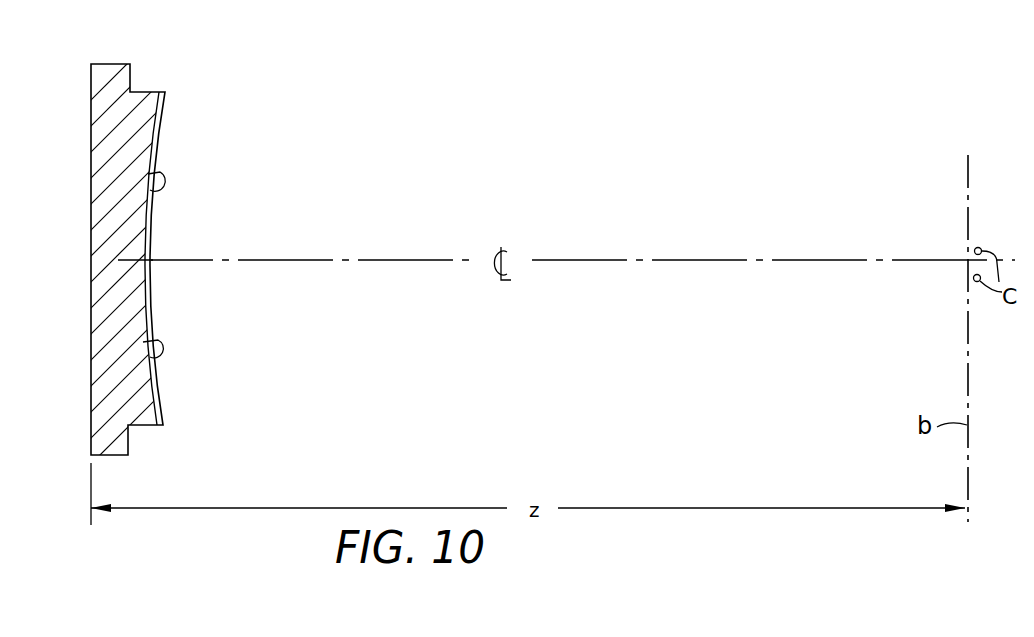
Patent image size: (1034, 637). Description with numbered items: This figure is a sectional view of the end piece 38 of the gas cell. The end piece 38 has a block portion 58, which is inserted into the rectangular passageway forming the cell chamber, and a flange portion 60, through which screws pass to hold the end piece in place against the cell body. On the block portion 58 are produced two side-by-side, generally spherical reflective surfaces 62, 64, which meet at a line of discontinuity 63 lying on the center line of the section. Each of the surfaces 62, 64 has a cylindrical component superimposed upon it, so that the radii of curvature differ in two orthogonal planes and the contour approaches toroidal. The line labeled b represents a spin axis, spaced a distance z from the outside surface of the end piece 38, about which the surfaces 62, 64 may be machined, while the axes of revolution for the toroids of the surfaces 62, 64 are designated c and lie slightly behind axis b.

The end piece 38 is at (88, 271).
The block portion 58 is at (141, 114).
The flange portion 60 is at (108, 440).
The reflective surface 62 is at (148, 174).
The line of discontinuity 63 is at (153, 260).
The reflective surface 64 is at (143, 342).